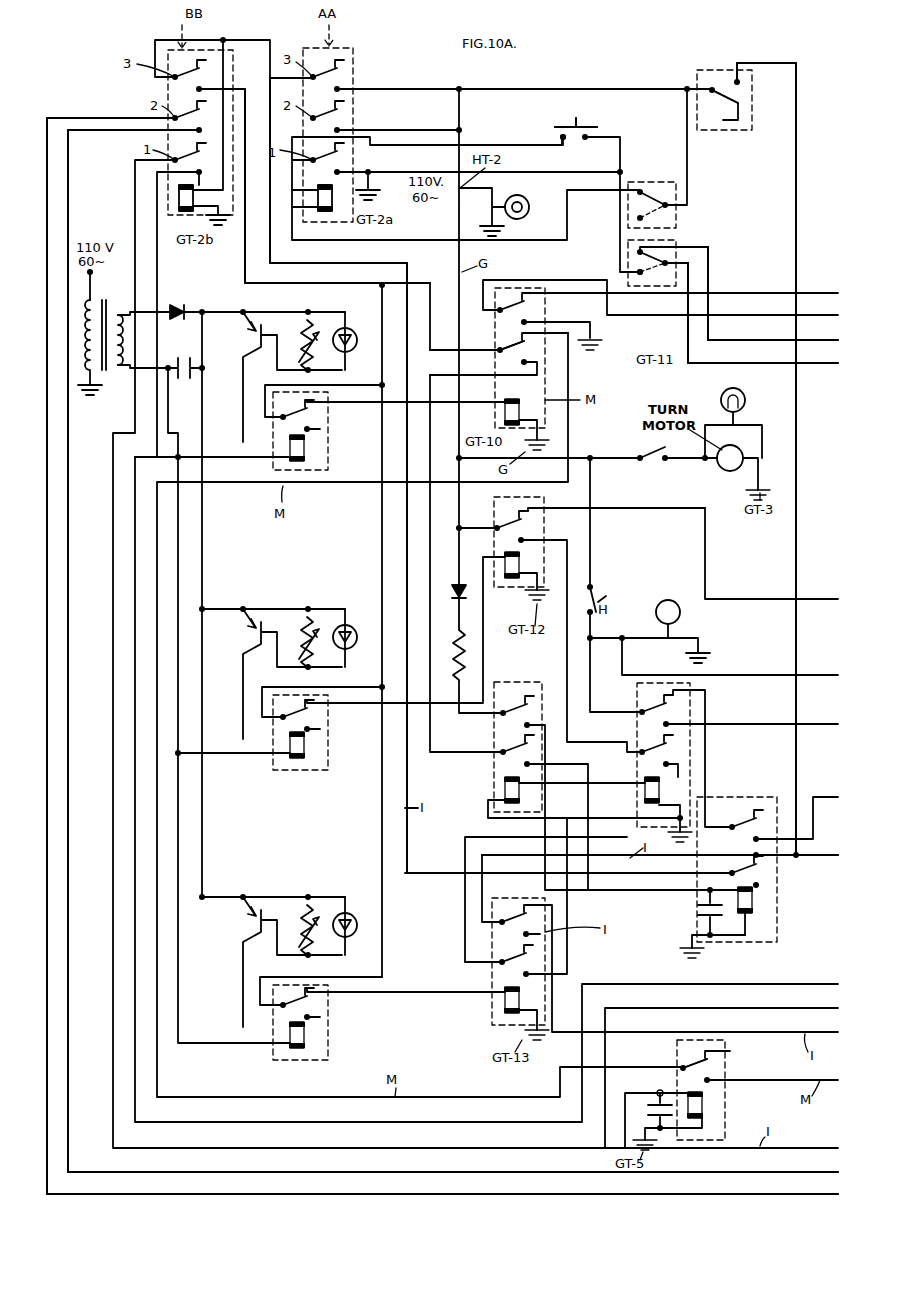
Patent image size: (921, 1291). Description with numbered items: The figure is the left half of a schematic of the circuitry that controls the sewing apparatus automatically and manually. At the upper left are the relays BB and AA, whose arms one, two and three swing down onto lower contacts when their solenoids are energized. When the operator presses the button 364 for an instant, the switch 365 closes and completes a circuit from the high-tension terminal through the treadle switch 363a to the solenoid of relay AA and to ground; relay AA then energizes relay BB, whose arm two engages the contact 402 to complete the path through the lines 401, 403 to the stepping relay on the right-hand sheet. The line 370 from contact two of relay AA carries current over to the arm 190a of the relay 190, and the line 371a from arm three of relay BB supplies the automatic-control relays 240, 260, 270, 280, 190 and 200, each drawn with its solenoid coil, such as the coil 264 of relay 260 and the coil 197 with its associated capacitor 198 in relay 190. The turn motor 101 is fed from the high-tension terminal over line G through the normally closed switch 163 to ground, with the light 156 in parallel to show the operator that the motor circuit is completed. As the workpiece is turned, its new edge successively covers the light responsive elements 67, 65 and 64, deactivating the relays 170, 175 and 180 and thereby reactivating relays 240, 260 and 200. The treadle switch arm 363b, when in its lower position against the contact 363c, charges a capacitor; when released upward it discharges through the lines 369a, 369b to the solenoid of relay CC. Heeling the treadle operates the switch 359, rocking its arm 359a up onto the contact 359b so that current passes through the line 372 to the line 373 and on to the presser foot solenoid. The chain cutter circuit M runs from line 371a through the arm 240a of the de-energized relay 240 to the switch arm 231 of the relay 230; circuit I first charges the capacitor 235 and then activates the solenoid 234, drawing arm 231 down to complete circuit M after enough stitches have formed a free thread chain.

The contact 402 is at (175, 122).
The line 401 is at (47, 550).
The line 403 is at (68, 616).
The line 371a is at (245, 272).
The line 370 is at (408, 282).
The light responsive element 67 is at (350, 328).
The relay 170 is at (328, 437).
The light responsive element 65 is at (350, 625).
The relay 175 is at (307, 772).
The light responsive element 64 is at (348, 913).
The relay 180 is at (330, 1032).
The switch 365 is at (560, 135).
The button 364 is at (582, 114).
The switch 359 is at (712, 70).
The switch arm 359a is at (730, 100).
The contact 359b is at (740, 82).
The switch 363a is at (655, 188).
The switch 363b is at (668, 250).
The contact 363c is at (641, 276).
The line 369a is at (815, 365).
The line 369b is at (710, 274).
The relay 240 is at (548, 420).
The relay arm 240a is at (515, 352).
The light 156 is at (743, 394).
The switch 163 is at (653, 467).
The turn motor 101 is at (730, 470).
The line 372 is at (800, 556).
The relay 260 is at (540, 497).
The relay coil 264 is at (507, 582).
The relay 270 is at (637, 698).
The relay 280 is at (494, 784).
The relay 190 is at (738, 797).
The relay arm 190a is at (760, 870).
The relay coil 197 is at (753, 906).
The capacitor 198 is at (698, 914).
The relay 200 is at (492, 988).
The line 373 is at (828, 855).
The relay 230 is at (725, 1062).
The switch arm 231 is at (681, 1068).
The capacitor 235 is at (658, 1103).
The solenoid 234 is at (705, 1106).